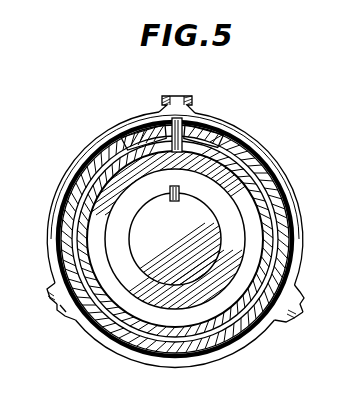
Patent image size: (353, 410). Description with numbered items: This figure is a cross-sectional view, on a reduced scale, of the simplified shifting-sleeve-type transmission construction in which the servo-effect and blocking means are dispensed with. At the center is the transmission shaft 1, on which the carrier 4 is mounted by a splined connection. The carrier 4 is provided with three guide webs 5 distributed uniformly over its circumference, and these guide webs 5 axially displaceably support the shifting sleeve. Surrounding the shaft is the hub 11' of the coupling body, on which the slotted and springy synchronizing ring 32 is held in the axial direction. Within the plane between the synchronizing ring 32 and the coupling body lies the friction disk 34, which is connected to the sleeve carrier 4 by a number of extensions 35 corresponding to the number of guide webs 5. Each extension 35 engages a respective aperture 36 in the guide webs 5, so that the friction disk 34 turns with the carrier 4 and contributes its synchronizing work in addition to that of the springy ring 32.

The friction disk 34 is at (72, 157).
The hub 11' is at (148, 239).
The synchronizing ring 32 is at (288, 212).
The carrier 4 is at (177, 302).
The transmission shaft 1 is at (206, 213).
The guide webs 5 is at (188, 98).
The extensions 35 is at (54, 311).
The aperture 36 is at (64, 318).